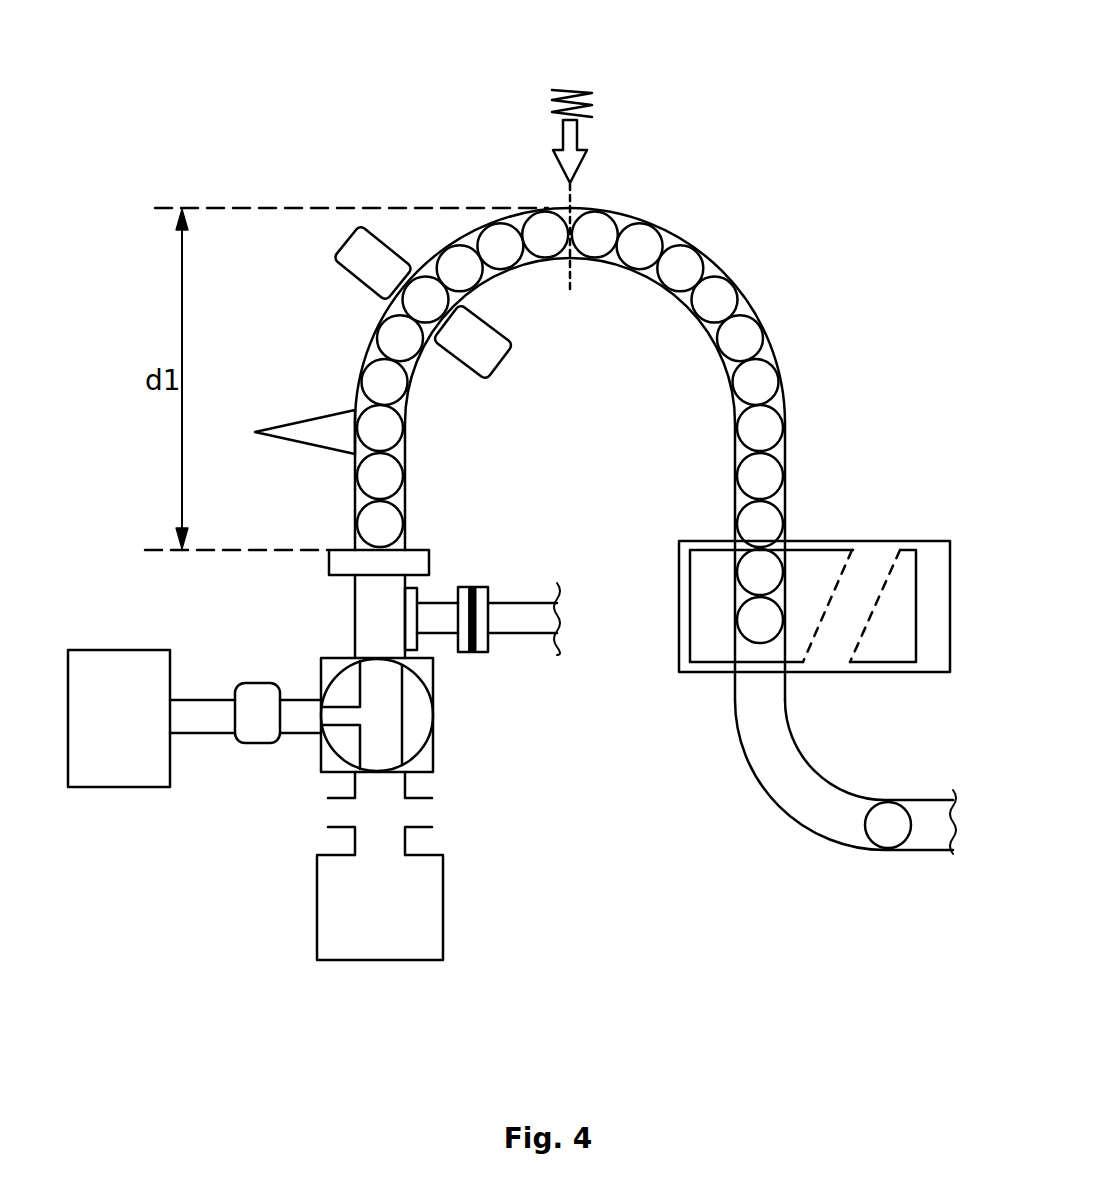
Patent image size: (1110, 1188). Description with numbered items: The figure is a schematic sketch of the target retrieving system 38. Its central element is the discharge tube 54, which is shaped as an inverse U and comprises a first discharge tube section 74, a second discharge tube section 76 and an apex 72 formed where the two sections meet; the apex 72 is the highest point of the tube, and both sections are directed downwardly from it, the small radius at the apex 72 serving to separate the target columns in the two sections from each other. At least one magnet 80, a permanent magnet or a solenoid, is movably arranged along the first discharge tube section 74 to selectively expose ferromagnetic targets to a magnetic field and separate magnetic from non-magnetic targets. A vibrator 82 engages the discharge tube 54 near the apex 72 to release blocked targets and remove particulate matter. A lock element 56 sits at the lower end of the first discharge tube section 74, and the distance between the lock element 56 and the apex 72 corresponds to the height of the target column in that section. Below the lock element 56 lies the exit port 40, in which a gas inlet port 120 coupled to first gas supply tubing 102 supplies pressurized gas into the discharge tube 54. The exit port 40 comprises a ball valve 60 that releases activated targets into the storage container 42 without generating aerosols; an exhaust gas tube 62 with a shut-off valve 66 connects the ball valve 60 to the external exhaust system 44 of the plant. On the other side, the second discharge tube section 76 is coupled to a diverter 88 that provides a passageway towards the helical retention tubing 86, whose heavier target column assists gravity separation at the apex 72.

The target retrieving system 38 is at (712, 222).
The exit port 40 is at (363, 608).
The storage container 42 is at (418, 900).
The external exhaust system 44 is at (137, 734).
The discharge tube 54 is at (632, 213).
The lock element 56 is at (333, 562).
The ball valve 60 is at (418, 718).
The exhaust gas tube 62 is at (195, 723).
The shut-off valve 66 is at (255, 735).
The apex 72 is at (578, 283).
The first discharge tube section 74 is at (368, 350).
The second discharge tube section 76 is at (758, 308).
The magnet 80 is at (372, 246).
The vibrator 82 is at (582, 92).
The retention tubing 86 is at (805, 812).
The diverter 88 is at (926, 560).
The first gas supply tubing 102 is at (514, 625).
The gas inlet port 120 is at (428, 612).